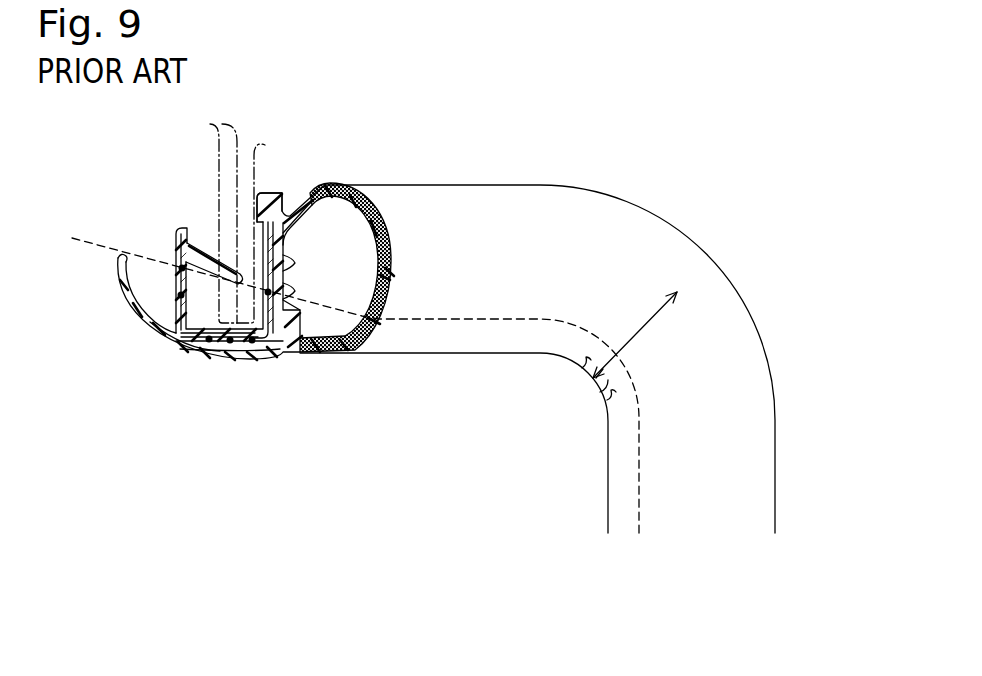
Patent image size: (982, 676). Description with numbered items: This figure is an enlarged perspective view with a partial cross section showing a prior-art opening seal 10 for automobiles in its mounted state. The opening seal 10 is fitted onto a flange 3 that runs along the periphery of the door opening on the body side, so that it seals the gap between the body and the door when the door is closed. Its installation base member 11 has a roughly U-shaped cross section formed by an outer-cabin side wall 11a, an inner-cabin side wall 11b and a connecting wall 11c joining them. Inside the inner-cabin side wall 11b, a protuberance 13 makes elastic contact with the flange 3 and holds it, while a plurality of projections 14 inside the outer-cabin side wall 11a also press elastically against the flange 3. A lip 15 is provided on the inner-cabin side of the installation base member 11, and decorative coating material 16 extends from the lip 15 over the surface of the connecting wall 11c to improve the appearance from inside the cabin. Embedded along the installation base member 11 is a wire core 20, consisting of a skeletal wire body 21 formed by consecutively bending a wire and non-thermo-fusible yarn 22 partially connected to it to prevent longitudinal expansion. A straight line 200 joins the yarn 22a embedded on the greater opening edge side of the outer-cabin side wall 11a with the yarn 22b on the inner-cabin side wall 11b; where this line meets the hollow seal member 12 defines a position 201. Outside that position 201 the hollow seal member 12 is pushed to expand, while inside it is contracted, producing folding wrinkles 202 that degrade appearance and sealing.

The flange 3 is at (218, 206).
The opening seal for automobiles 10 is at (467, 117).
The installation base member 11 is at (272, 358).
The outer-cabin side wall 11a is at (289, 218).
The inner-cabin side wall 11b is at (176, 246).
The connecting wall 11c is at (242, 350).
The hollow seal member 12 is at (376, 206).
The protuberance 13 is at (206, 250).
The projections 14 is at (286, 270).
The lip 15 is at (130, 303).
The decorative coating material 16 is at (157, 343).
The wire core 20 is at (197, 352).
The wire body 21 is at (283, 208).
The non-thermo-fusible yarn 22 is at (178, 294).
The non-thermo-fusible yarn on outer-cabin side wall 22a is at (395, 276).
The non-thermo-fusible yarn on inner-cabin side wall 22b is at (178, 267).
The straight line 200 is at (105, 248).
The position 201 is at (374, 322).
The folding wrinkles 202 is at (580, 362).